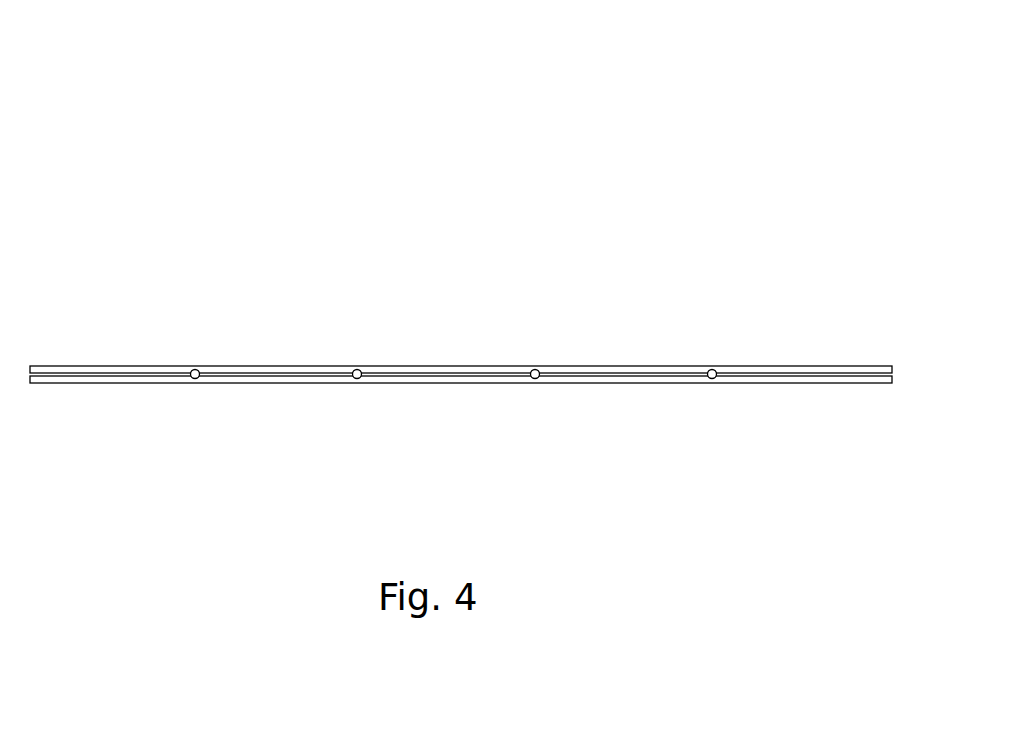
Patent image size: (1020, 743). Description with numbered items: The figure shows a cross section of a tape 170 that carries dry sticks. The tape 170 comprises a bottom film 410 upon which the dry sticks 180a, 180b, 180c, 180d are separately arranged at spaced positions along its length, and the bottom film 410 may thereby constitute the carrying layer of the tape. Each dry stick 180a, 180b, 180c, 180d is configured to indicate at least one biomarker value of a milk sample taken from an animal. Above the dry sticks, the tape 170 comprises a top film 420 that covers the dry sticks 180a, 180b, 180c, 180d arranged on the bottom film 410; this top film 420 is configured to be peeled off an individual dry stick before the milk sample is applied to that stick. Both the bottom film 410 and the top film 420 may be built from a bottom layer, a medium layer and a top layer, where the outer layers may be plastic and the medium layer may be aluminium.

The tape 170 is at (816, 95).
The bottom film 410 is at (45, 377).
The top film 420 is at (47, 370).
The dry stick 180a is at (195, 369).
The dry stick 180b is at (357, 369).
The dry stick 180c is at (535, 369).
The dry stick 180d is at (712, 369).